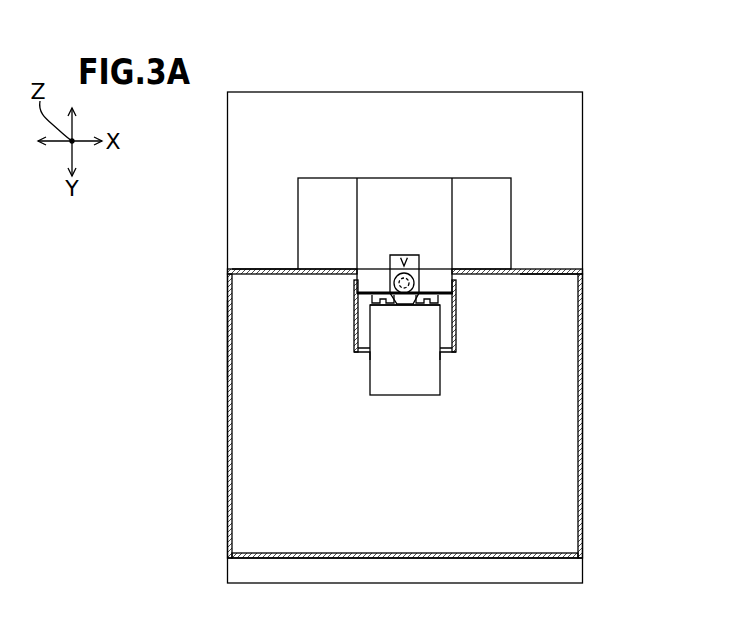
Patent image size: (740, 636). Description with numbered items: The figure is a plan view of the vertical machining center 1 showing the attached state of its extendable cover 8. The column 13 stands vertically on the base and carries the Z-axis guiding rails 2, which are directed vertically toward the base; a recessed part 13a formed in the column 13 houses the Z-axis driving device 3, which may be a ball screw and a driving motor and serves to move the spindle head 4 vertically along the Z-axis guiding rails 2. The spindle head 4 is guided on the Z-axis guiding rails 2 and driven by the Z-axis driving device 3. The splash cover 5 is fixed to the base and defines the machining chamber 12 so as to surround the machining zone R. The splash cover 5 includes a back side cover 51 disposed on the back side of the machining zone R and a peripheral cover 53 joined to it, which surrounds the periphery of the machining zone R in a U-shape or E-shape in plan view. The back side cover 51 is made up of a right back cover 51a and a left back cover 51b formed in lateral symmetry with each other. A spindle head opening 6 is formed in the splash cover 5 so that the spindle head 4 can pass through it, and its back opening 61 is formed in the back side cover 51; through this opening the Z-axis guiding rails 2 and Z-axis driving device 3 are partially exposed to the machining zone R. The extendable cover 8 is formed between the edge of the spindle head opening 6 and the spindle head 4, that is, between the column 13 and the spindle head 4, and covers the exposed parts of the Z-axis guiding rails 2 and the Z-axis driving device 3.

The vertical machining center 1 is at (634, 104).
The Z-axis guiding rails 2 is at (376, 292).
The Z-axis driving device 3 is at (404, 258).
The spindle head 4 is at (441, 386).
The splash cover 5 is at (225, 437).
The spindle head opening 6 is at (460, 285).
The back opening 61 is at (434, 273).
The extendable cover 8 is at (456, 345).
The machining chamber 12 is at (201, 340).
The column 13 is at (452, 205).
The recessed part 13a is at (418, 261).
The back side cover 51 is at (547, 266).
The right back cover 51a is at (560, 274).
The left back cover 51b is at (258, 268).
The peripheral cover 53 is at (584, 403).
The machining zone R is at (375, 420).